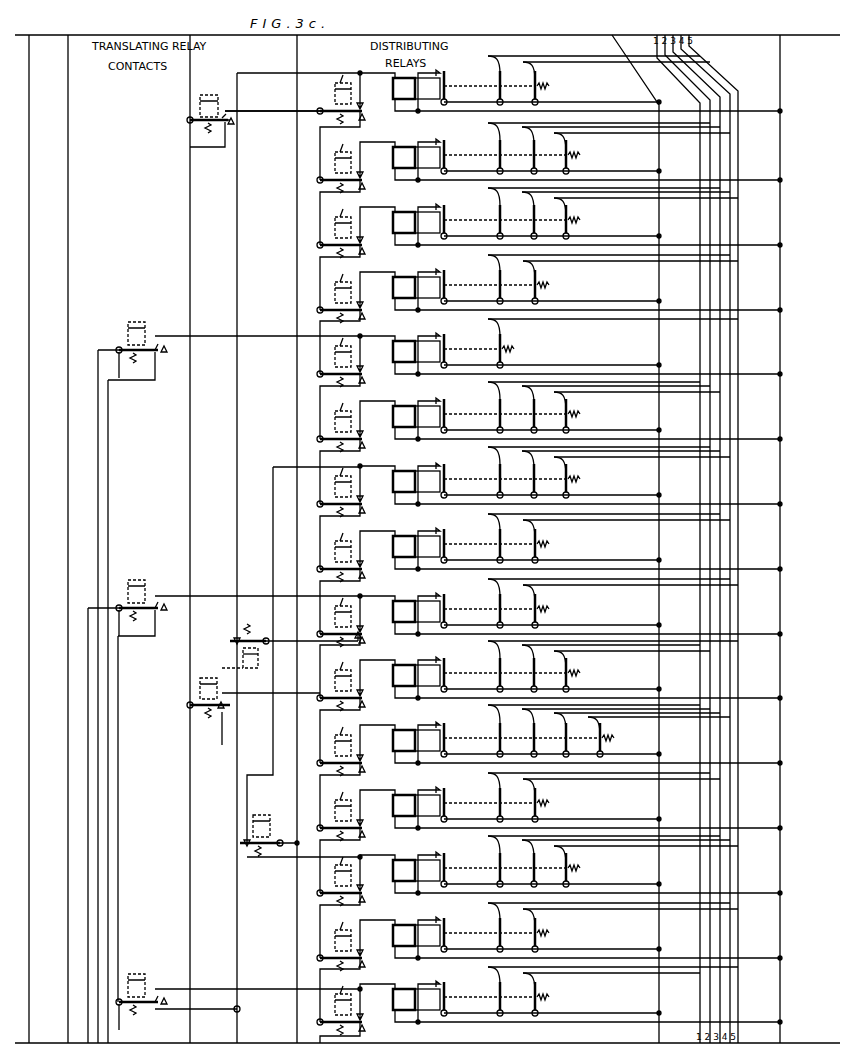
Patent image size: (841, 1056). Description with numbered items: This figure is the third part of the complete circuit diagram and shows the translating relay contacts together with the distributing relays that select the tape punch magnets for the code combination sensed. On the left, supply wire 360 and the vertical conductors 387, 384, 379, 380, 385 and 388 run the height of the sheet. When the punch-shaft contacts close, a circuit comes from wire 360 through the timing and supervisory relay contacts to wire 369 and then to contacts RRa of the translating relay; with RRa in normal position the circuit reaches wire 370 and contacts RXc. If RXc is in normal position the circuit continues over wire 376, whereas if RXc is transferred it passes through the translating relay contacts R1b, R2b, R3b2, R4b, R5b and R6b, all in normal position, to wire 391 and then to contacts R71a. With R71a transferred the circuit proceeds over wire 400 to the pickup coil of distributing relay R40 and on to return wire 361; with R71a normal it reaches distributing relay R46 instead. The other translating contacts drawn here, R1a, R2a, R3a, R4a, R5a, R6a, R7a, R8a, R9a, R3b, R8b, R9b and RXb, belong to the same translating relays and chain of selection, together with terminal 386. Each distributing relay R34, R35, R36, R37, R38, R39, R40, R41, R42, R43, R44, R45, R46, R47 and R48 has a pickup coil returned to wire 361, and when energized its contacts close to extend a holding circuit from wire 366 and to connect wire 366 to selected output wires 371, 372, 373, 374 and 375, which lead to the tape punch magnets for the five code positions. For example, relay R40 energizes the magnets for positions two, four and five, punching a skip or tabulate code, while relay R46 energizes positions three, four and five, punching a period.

The wire 360 is at (29, 118).
The bus conductor 387 is at (68, 185).
The conductor 384 is at (88, 692).
The conductor 379 is at (98, 352).
The conductor 380 is at (108, 496).
The conductor 385 is at (118, 771).
The wire 370 is at (190, 426).
The wire 376 is at (190, 876).
The conductor 388 is at (237, 282).
The wire 391 is at (290, 70).
The wire 400 is at (273, 467).
The terminal 386 is at (238, 1011).
The wire 369 is at (190, 112).
The wire 361 is at (780, 52).
The wire 366 is at (636, 94).
The wire 371 is at (700, 409).
The wire 372 is at (710, 476).
The wire 373 is at (720, 481).
The wire 374 is at (730, 544).
The wire 375 is at (738, 604).
The contacts of relay RR RRa is at (228, 116).
The contacts of relay R3 R3b is at (140, 320).
The contacts of relay R8 R8b is at (160, 620).
The contacts of relay R9 R9b is at (168, 984).
The contacts of relay RX RXb is at (232, 641).
The contacts of relay RX RXc is at (228, 708).
The contacts of relay R71 R71a is at (240, 843).
The distributing relay R34 is at (408, 78).
The distributing relay R35 is at (408, 147).
The distributing relay R36 is at (408, 212).
The distributing relay R37 is at (408, 277).
The distributing relay R38 is at (408, 341).
The distributing relay R39 is at (408, 406).
The distributing relay R40 is at (408, 471).
The distributing relay R41 is at (408, 536).
The distributing relay R42 is at (408, 601).
The distributing relay R43 is at (408, 665).
The distributing relay R44 is at (408, 730).
The distributing relay R45 is at (408, 795).
The distributing relay R46 is at (408, 860).
The distributing relay R47 is at (408, 925).
The distributing relay R48 is at (408, 989).
The contacts of relay R1 R1a is at (356, 96).
The contacts of relay R2 R2a is at (358, 163).
The contacts of relay R3 R3a is at (358, 228).
The contacts of relay R4 R4a is at (358, 293).
The contacts of relay R5 R5a is at (358, 357).
The contacts of relay R6 R6a is at (358, 422).
The contacts of relay R7 R7a is at (358, 487).
The contacts of relay R8 R8a is at (358, 552).
The contacts of relay R9 R9a is at (358, 617).
The contacts of relay R1 R1b is at (359, 681).
The contacts of relay R2 R2b is at (359, 746).
The contacts of relay R3 R3b2 is at (359, 811).
The contacts of relay R4 R4b is at (359, 876).
The contacts of relay R5 R5b is at (359, 941).
The contacts of relay R6 R6b is at (359, 1005).